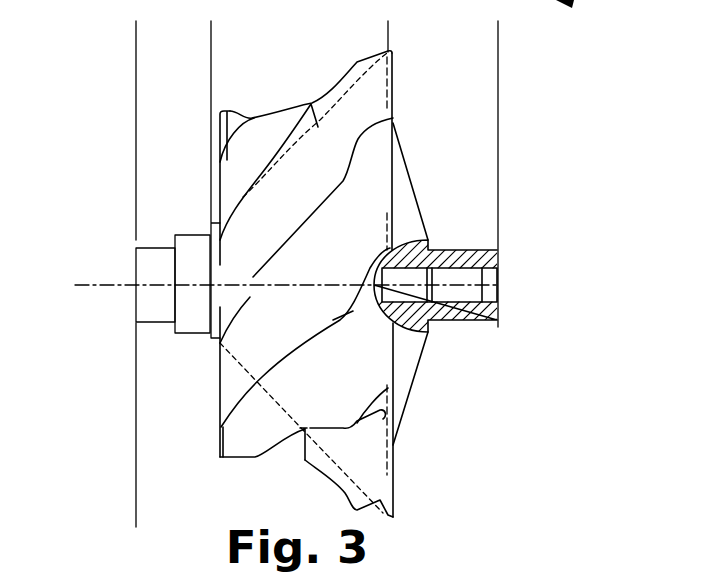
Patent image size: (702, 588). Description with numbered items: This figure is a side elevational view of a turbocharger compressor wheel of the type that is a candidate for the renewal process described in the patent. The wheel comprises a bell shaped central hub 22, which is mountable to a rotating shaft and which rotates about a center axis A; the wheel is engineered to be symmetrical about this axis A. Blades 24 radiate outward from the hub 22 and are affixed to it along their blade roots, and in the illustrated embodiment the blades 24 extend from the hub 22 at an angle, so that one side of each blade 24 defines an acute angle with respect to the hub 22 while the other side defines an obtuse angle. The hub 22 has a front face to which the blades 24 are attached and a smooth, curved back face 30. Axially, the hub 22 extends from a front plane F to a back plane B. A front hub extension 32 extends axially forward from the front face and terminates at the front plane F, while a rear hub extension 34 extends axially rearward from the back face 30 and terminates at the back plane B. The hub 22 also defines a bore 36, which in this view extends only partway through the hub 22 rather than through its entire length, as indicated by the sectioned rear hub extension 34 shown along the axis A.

The central hub 22 is at (272, 400).
The blades 24 is at (270, 110).
The back face 30 is at (410, 178).
The front hub extension 32 is at (155, 322).
The rear hub extension 34 is at (463, 250).
The bore 36 is at (530, 289).
The axis A is at (88, 288).
The back plane B is at (498, 93).
The front plane F is at (136, 93).